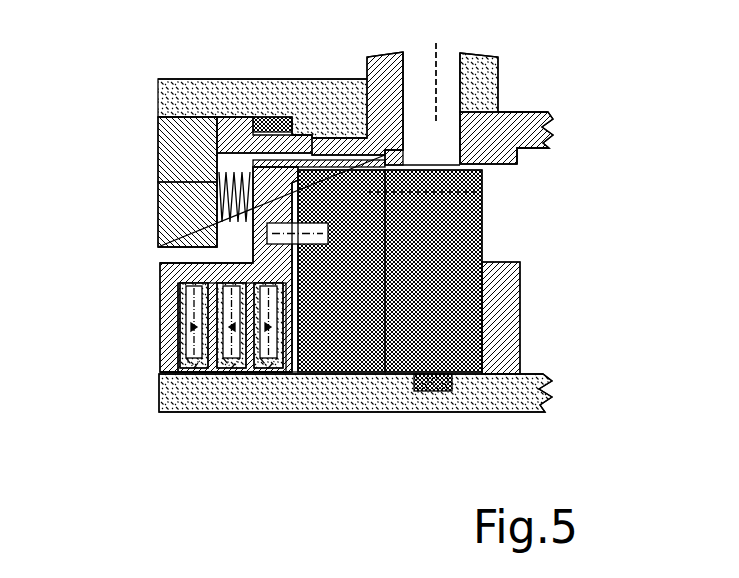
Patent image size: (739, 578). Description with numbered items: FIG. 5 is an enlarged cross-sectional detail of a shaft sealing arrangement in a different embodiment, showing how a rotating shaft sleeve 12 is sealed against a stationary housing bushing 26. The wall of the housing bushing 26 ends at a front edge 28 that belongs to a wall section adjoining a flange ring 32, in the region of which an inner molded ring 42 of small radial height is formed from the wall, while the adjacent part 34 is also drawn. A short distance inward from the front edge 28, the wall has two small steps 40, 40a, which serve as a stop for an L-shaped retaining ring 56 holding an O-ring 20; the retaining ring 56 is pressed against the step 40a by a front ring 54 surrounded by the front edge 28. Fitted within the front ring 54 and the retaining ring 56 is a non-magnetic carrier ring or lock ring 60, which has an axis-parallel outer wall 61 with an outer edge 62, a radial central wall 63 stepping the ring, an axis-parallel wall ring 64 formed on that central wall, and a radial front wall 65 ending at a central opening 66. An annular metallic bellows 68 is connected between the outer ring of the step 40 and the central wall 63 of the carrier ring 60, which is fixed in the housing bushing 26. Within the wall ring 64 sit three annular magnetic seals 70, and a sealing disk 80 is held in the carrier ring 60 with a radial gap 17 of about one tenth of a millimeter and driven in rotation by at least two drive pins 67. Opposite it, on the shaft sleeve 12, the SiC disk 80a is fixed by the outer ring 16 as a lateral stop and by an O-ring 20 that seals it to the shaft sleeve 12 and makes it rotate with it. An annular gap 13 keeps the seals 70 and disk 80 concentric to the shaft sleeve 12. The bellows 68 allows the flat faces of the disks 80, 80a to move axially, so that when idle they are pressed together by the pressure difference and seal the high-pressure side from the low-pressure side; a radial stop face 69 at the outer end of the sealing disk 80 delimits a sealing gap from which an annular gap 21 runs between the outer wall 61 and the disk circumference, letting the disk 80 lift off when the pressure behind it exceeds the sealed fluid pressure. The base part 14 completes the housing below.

The shaft sleeve 12 is at (570, 364).
The annular gap 13 is at (320, 374).
The base plate 14 is at (159, 401).
The outer ring 16 is at (522, 290).
The radial gap 17 is at (293, 374).
The O-ring 20 is at (273, 117).
The annular gap 21 is at (435, 323).
The housing bushing 26 is at (572, 118).
The front edge 28 is at (158, 97).
The flange ring 32 is at (447, 63).
The sleeve 34 is at (450, 76).
The step 40 is at (310, 136).
The step 40a is at (431, 103).
The inner molded ring 42 is at (518, 157).
The front ring 54 is at (152, 144).
The retaining ring 56 is at (233, 130).
The carrier ring 60 is at (163, 316).
The outer wall 61 is at (383, 158).
The outer edge 62 is at (360, 175).
The central wall 63 is at (253, 252).
The wall ring 64 is at (160, 276).
The front wall 65 is at (170, 297).
The central opening 66 is at (170, 372).
The drive pins 67 is at (267, 233).
The bellows 68 is at (205, 199).
The stop face 69 is at (219, 178).
The magnetic seals 70 is at (270, 372).
The sealing disk 80 is at (348, 342).
The SiC disk 80a is at (460, 247).